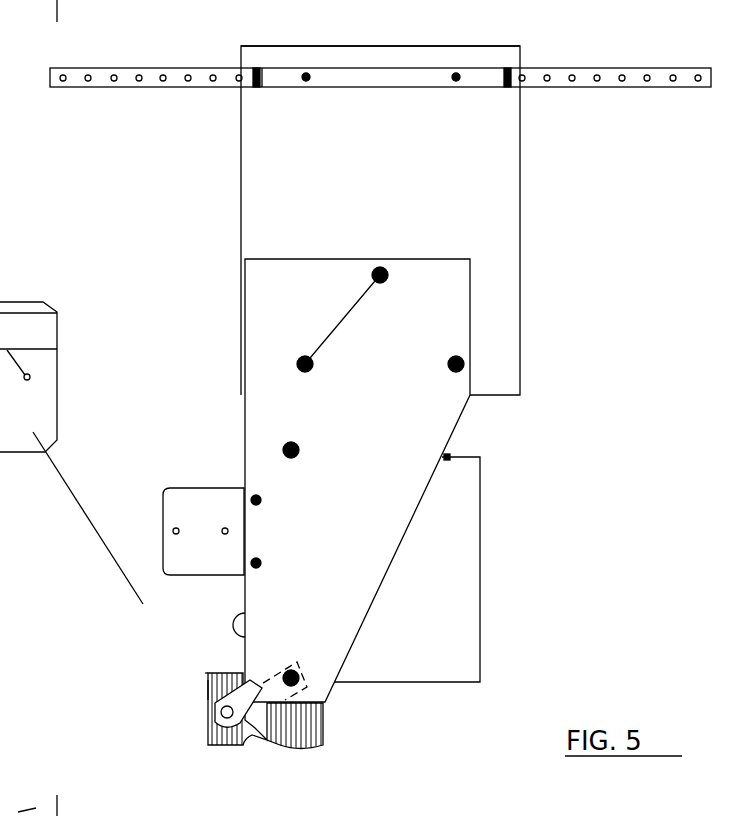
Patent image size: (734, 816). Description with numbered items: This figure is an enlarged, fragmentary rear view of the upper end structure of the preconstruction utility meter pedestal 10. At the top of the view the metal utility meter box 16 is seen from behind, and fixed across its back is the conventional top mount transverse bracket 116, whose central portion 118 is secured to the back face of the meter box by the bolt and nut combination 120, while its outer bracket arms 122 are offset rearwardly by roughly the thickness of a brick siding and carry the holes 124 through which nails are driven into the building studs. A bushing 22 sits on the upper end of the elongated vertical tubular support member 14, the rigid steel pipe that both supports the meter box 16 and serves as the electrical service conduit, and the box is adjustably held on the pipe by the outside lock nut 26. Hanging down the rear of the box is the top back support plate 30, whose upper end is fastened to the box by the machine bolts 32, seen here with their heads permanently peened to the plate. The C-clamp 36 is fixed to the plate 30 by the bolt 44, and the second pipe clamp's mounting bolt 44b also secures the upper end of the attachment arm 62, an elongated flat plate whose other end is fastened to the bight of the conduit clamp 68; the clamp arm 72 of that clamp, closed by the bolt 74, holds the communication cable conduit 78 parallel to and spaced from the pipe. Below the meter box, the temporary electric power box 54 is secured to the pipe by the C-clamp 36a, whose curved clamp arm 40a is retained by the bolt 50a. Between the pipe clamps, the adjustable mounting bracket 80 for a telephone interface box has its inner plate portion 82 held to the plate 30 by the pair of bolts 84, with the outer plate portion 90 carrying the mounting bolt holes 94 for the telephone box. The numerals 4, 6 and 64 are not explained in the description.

The preconstruction utility meter pedestal 10 is at (222, 242).
The elongated vertical tubular support member 14 is at (323, 711).
The metal utility meter box 16 is at (448, 220).
The bushing 22 is at (355, 57).
The outside lock nut 26 is at (14, 172).
The top back support plate 30 is at (393, 480).
The machine bolts 32 is at (366, 319).
The C-clamp 36 is at (14, 242).
The C-clamp 36a is at (38, 520).
The curved clamp arm 40a is at (23, 485).
The bolt 44 is at (347, 447).
The mounting bolt 44b is at (347, 656).
The bolt 50a is at (34, 575).
The temporary electric power box 54 is at (453, 568).
The attachment arm 62 is at (326, 721).
The bolt hole 64 is at (301, 746).
The conduit clamp 68 is at (118, 767).
The curved clamp arm 72 is at (0, 690).
The bolt 74 is at (0, 657).
The communication cable conduit 78 is at (208, 686).
The adjustable mounting bracket 80 is at (130, 453).
The inner plate portion 82 is at (57, 313).
The bolts 84 is at (258, 560).
The outer plate portion 90 is at (119, 527).
The mounting bolt holes 94 is at (57, 349).
The top mount transverse bracket 116 is at (336, 35).
The central portion 118 is at (346, 136).
The bolt and nut combination 120 is at (454, 80).
The bracket arms 122 is at (389, 123).
The holes 124 is at (139, 81).
The member 4 is at (3, 423).
The member 6 is at (4, 395).